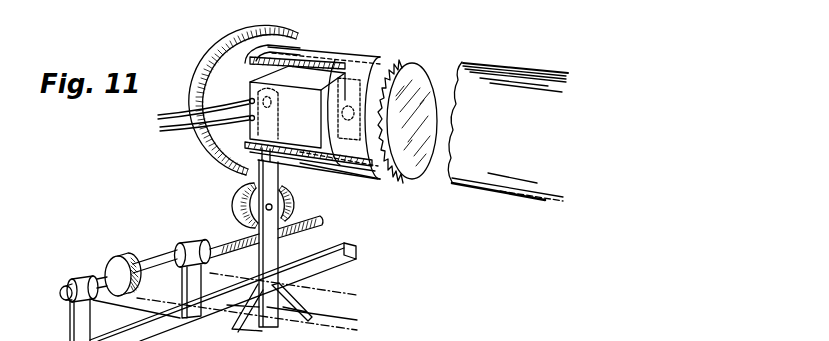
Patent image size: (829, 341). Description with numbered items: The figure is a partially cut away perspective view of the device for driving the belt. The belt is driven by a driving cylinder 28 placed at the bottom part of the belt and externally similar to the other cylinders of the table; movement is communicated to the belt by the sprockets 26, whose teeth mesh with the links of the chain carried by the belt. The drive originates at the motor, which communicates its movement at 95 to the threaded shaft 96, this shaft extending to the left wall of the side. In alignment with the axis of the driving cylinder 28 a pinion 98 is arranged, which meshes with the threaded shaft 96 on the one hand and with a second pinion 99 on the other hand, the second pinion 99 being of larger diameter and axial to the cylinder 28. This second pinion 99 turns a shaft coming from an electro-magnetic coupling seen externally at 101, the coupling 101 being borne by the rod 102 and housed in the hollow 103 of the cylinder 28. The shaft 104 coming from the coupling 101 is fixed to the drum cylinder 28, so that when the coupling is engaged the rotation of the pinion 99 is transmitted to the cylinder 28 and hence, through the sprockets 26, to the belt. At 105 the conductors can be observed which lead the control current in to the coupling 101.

The sprocket 26 is at (394, 176).
The driving cylinder 28 is at (373, 180).
The motor drive connection 95 is at (118, 268).
The threaded shaft 96 is at (177, 247).
The pinion 98 is at (251, 205).
The second pinion 99 is at (230, 150).
The electro-magnetic coupling 101 is at (299, 127).
The rod 102 is at (271, 249).
The hollow 103 is at (333, 47).
The shaft 104 is at (343, 166).
The conductors 105 is at (174, 111).